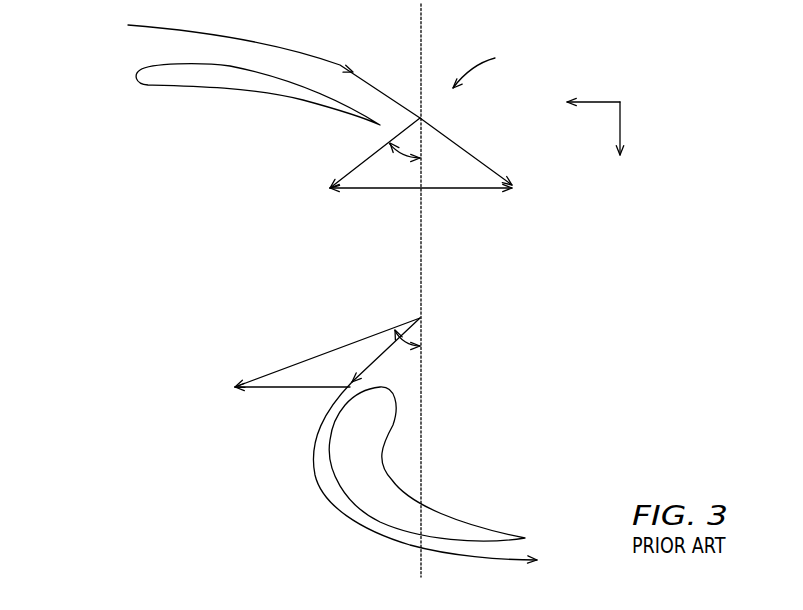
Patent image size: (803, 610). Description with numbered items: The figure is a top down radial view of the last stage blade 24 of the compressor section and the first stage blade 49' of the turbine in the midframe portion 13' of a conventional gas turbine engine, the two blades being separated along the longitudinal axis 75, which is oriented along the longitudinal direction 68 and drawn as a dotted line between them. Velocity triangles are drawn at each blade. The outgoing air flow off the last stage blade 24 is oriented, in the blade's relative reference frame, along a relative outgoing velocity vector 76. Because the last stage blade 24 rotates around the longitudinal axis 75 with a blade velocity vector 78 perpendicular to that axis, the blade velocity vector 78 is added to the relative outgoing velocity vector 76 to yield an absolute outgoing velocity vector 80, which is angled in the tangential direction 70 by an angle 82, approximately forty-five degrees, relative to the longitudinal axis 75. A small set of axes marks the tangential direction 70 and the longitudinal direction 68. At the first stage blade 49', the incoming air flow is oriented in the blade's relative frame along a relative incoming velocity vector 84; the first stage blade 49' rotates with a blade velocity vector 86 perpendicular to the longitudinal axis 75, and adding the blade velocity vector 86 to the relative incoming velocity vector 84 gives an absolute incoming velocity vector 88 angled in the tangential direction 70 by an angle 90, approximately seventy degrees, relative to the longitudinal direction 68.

The last stage blade 24 is at (255, 88).
The longitudinal axis 75 is at (422, 33).
The midframe portion 13' is at (489, 66).
The relative outgoing velocity vector 76 is at (460, 148).
The blade velocity vector 78 is at (452, 190).
The absolute outgoing velocity vector 80 is at (367, 163).
The angle 82 is at (404, 160).
The tangential direction 70 is at (598, 102).
The longitudinal direction 68 is at (618, 120).
The absolute incoming velocity vector 88 is at (325, 347).
The blade velocity vector 86 is at (290, 390).
The relative incoming velocity vector 84 is at (382, 355).
The angle 90 is at (405, 347).
The first stage blade 49' is at (392, 464).